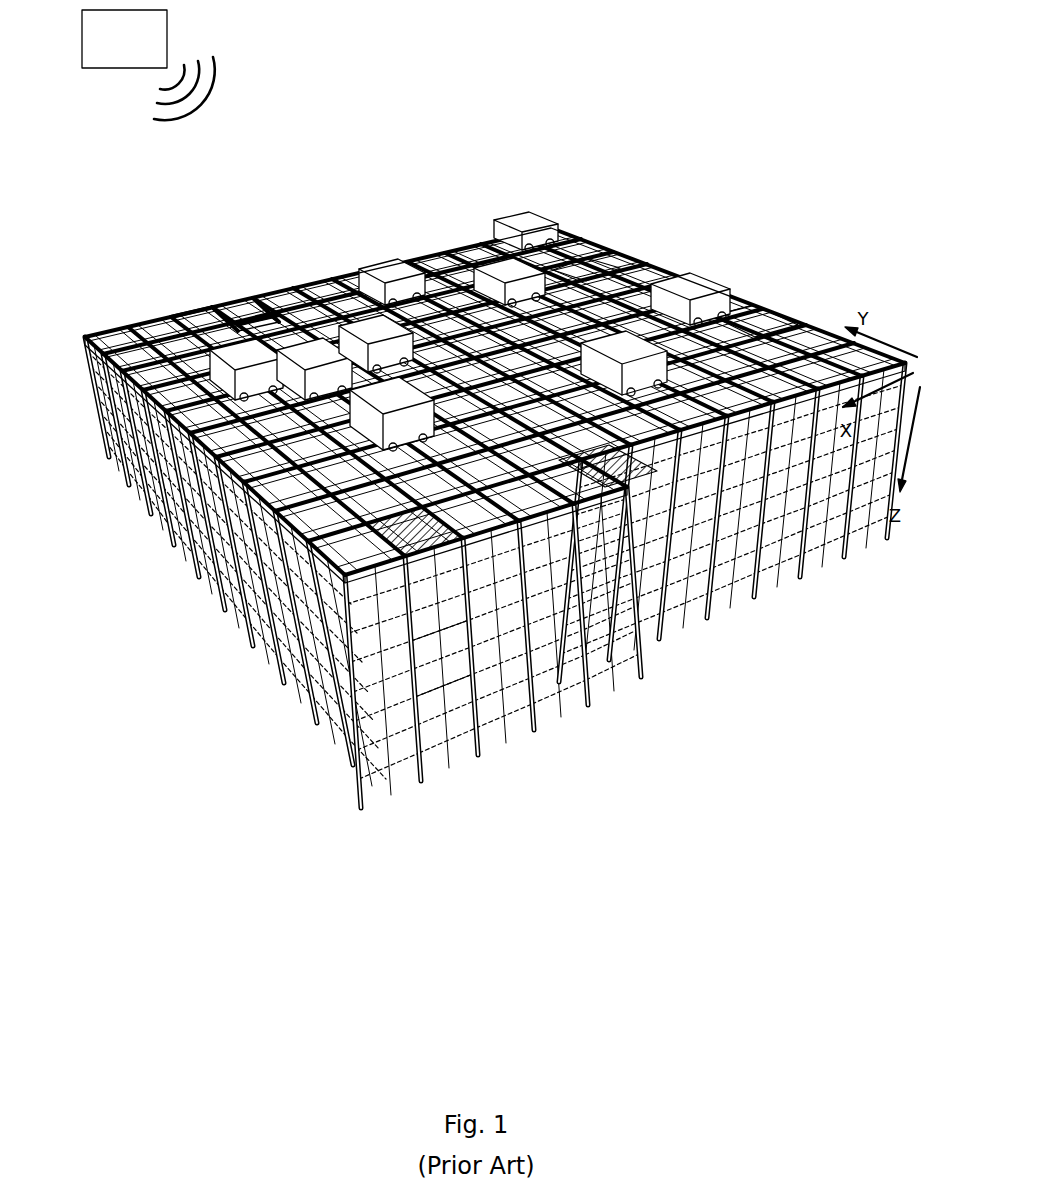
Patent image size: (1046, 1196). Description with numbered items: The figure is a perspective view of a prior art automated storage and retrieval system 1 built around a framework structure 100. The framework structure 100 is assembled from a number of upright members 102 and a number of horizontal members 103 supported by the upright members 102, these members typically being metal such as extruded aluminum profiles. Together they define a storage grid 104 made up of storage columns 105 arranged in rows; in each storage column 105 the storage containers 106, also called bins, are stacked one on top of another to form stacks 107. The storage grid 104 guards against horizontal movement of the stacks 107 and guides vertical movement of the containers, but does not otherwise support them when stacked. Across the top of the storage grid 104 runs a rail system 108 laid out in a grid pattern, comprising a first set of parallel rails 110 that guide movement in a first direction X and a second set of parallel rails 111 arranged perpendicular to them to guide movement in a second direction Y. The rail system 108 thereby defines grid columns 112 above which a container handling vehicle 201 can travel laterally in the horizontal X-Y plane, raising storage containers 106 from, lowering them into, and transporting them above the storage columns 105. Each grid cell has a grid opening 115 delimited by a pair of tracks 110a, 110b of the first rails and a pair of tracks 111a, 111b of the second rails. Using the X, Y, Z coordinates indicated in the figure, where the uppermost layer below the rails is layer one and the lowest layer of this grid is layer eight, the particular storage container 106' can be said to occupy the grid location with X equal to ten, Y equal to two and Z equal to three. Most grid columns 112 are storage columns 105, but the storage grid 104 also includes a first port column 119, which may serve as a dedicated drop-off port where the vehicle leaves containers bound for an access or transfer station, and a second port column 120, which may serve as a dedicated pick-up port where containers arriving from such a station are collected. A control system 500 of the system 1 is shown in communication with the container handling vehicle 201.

The automated storage and retrieval system 1 is at (441, 138).
The framework structure 100 is at (102, 496).
The upright members 102 is at (350, 703).
The horizontal members 103 is at (705, 550).
The storage grid 104 is at (93, 378).
The storage columns 105 is at (263, 603).
The storage containers 106 is at (502, 709).
The storage container 106' is at (498, 711).
The stacks 107 is at (783, 587).
The rail system 108 is at (833, 333).
The first set of parallel rails 110 is at (780, 358).
The track of the first set 110a is at (220, 305).
The track of the first set 110b is at (228, 305).
The second set of parallel rails 111 is at (343, 292).
The track of the second set 111a is at (202, 318).
The track of the second set 111b is at (253, 302).
The grid columns 112 is at (737, 338).
The grid opening 115 is at (205, 305).
The first port column 119 is at (433, 547).
The second port column 120 is at (613, 470).
The container handling vehicle 201 is at (558, 219).
The control system 500 is at (148, 65).